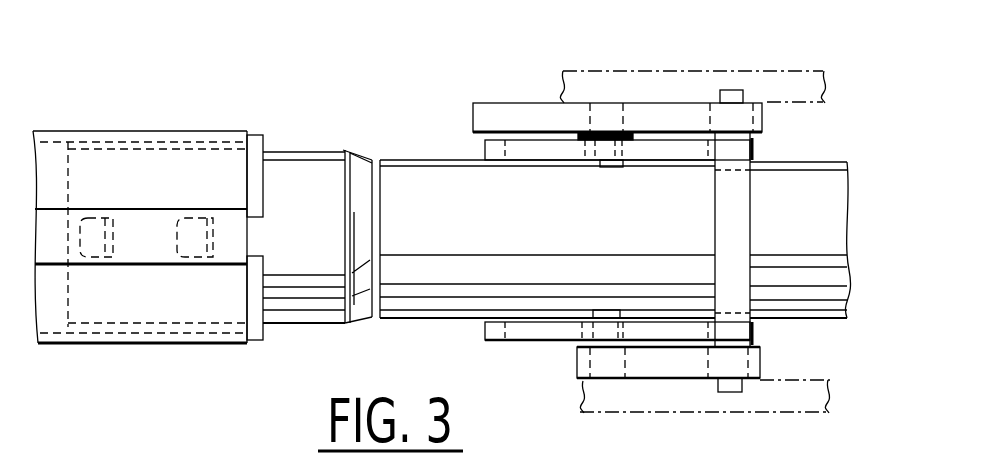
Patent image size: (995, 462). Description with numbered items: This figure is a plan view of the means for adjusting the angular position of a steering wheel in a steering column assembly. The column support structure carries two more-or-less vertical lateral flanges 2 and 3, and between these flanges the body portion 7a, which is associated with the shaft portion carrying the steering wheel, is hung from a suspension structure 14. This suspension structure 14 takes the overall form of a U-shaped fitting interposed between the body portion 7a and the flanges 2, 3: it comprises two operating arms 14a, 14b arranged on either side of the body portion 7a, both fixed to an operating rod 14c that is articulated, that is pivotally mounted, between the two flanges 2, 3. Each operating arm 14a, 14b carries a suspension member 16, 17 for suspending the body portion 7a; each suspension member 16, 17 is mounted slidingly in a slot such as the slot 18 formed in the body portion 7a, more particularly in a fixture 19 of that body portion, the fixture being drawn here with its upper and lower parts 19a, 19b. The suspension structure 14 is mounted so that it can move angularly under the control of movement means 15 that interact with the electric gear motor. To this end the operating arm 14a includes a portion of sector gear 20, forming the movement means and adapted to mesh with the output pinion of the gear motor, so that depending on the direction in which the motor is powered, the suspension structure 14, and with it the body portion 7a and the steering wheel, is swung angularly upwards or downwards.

The lateral flange 2 is at (819, 71).
The lateral flange 3 is at (808, 414).
The body portion 7a is at (812, 157).
The suspension structure 14 is at (609, 92).
The operating arm 14a is at (665, 100).
The operating arm 14b is at (659, 382).
The operating rod 14c is at (754, 240).
The movement means 15 is at (523, 102).
The suspension member 16 is at (606, 156).
The suspension member 17 is at (599, 310).
The slot 18 is at (655, 311).
The fixture 19 is at (760, 146).
The upper guide rail 19a is at (482, 148).
The lower guide rail 19b is at (484, 329).
The sector gear portion 20 is at (471, 118).